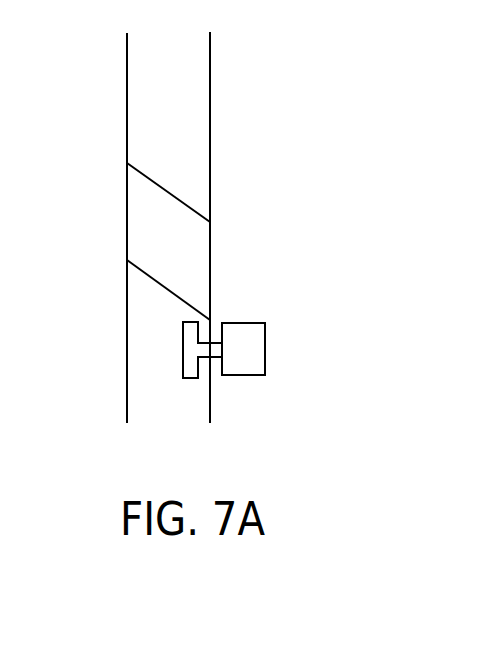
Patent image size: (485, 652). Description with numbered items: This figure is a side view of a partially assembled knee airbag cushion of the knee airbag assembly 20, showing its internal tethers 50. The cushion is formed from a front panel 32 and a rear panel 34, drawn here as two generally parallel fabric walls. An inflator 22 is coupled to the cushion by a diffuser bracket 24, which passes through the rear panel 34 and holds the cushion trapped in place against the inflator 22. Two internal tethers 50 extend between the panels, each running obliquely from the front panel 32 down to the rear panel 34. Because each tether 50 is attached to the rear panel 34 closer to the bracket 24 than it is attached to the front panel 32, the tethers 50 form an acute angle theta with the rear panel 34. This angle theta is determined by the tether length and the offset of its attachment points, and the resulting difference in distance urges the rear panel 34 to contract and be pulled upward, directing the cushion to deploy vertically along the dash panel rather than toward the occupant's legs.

The knee airbag assembly 20 is at (269, 102).
The inflator 22 is at (245, 330).
The diffuser bracket 24 is at (192, 352).
The front panel 32 is at (123, 93).
The rear panel 34 is at (211, 180).
The internal tethers 50 is at (153, 178).
The acute angle theta is at (209, 266).